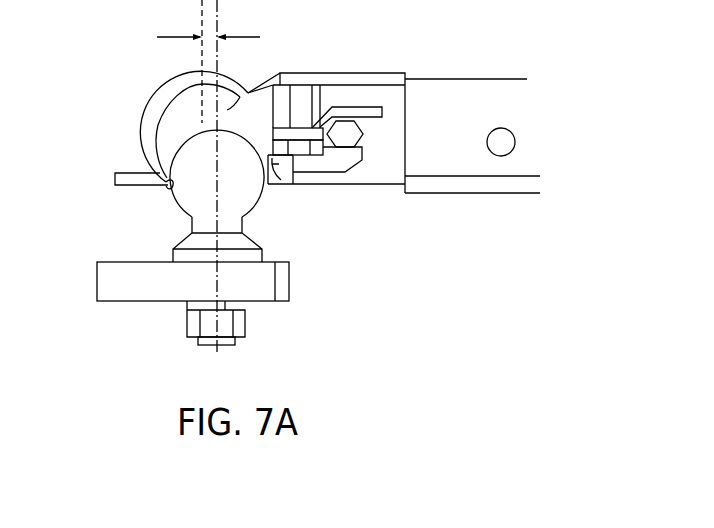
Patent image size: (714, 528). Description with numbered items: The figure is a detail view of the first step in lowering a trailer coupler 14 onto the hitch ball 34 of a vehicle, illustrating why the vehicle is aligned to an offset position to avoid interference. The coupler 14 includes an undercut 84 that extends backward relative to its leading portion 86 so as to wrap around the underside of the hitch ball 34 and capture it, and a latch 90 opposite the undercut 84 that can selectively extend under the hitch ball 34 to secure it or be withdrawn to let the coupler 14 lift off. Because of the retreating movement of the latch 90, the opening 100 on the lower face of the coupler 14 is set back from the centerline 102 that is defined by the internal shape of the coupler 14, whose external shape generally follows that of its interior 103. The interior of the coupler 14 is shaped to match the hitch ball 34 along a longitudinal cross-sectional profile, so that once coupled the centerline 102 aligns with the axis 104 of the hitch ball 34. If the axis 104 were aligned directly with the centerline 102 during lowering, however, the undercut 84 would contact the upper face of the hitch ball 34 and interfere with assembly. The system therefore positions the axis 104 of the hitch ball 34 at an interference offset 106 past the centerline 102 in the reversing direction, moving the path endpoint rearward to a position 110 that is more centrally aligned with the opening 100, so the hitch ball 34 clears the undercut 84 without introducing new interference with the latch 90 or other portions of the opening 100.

The coupler 14 is at (141, 72).
The hitch ball 34 is at (244, 199).
The undercut 84 is at (160, 172).
The leading portion 86 is at (169, 191).
The latch 90 is at (293, 184).
The opening 100 is at (268, 186).
The centerline 102 is at (202, 102).
The interior 103 is at (174, 123).
The axis 104 is at (240, 230).
The interference offset 106 is at (243, 35).
The position 110 is at (248, 92).